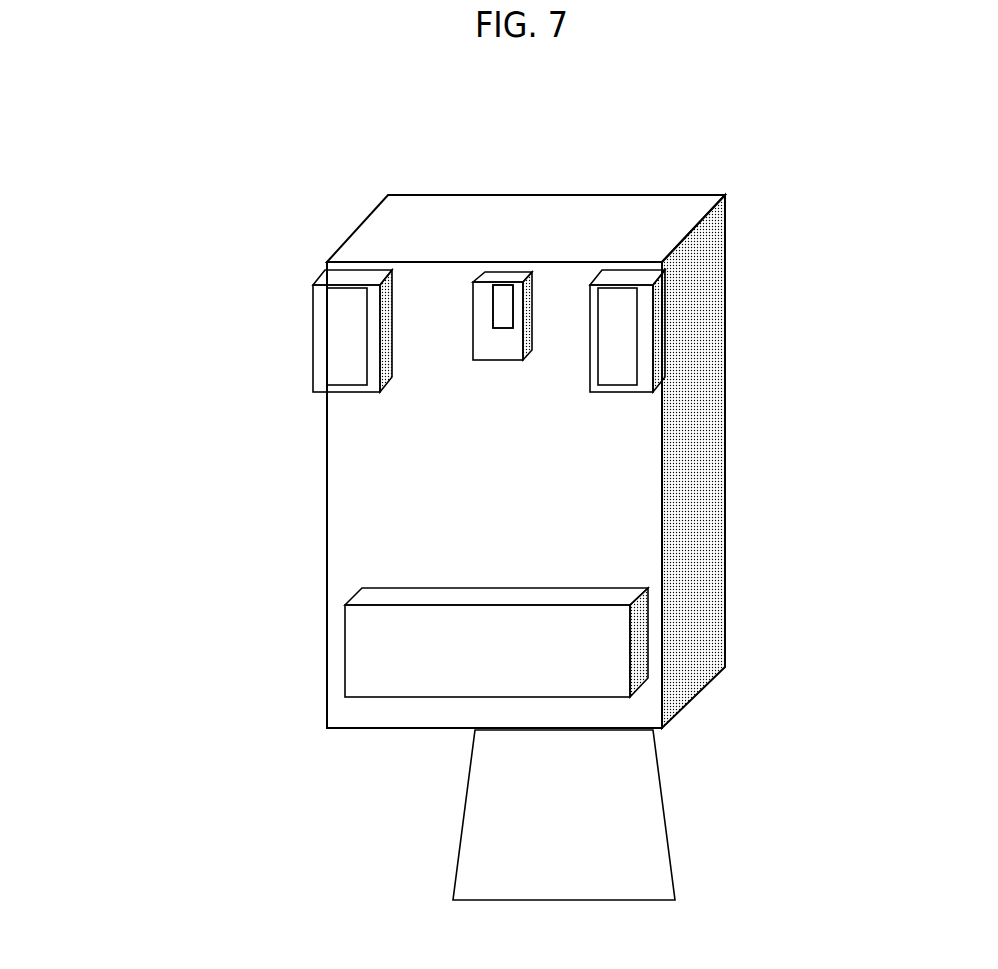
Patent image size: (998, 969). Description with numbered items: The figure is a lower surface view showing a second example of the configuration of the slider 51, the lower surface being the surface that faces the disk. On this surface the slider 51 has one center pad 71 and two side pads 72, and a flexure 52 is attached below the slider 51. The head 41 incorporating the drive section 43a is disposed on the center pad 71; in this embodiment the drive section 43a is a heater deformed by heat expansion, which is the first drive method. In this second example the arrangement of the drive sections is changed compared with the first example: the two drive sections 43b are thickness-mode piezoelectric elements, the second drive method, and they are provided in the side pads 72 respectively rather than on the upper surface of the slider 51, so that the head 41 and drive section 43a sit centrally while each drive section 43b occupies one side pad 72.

The head 41 is at (498, 290).
The drive section 43a is at (503, 306).
The drive section 43b is at (327, 332).
The slider 51 is at (663, 497).
The flexure 52 is at (564, 815).
The center pad 71 is at (497, 347).
The side pad 72 is at (313, 386).